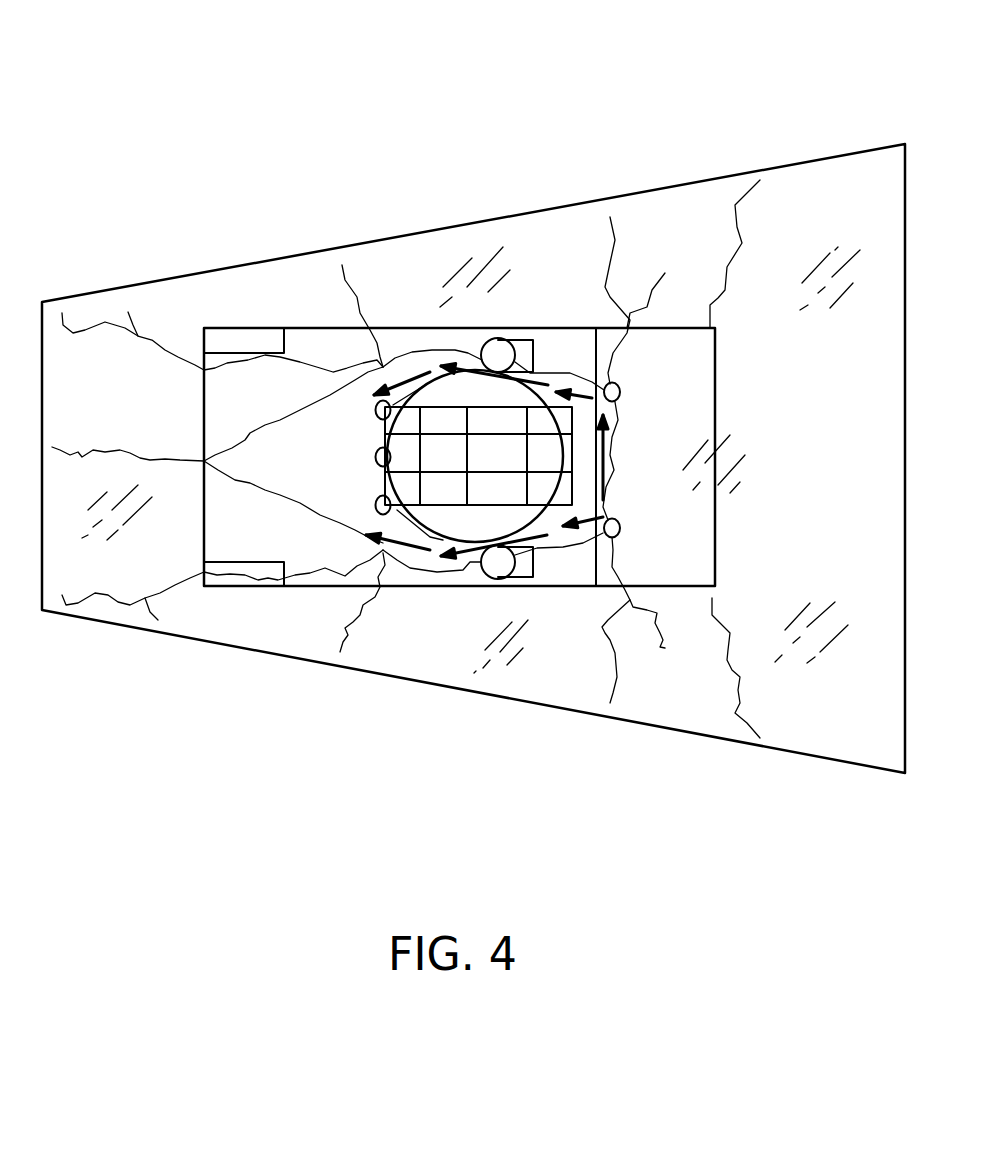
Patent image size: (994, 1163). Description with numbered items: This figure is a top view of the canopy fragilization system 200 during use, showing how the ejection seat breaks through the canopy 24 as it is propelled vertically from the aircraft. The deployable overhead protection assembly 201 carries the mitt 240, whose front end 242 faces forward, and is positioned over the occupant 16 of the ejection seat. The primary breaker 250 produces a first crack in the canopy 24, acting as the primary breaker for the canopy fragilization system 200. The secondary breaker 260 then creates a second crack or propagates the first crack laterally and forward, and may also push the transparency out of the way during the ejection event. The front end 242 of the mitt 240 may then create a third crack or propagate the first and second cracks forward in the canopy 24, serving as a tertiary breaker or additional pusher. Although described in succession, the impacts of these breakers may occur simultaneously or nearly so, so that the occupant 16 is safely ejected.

The canopy fragilization system 200 is at (722, 57).
The deployable overhead protection assembly 201 is at (538, 92).
The canopy 24 is at (667, 215).
The mitt 240 is at (438, 433).
The front end 242 is at (385, 433).
The secondary breaker 260 is at (612, 384).
The primary breaker 250 is at (613, 536).
The occupant 16 is at (432, 513).